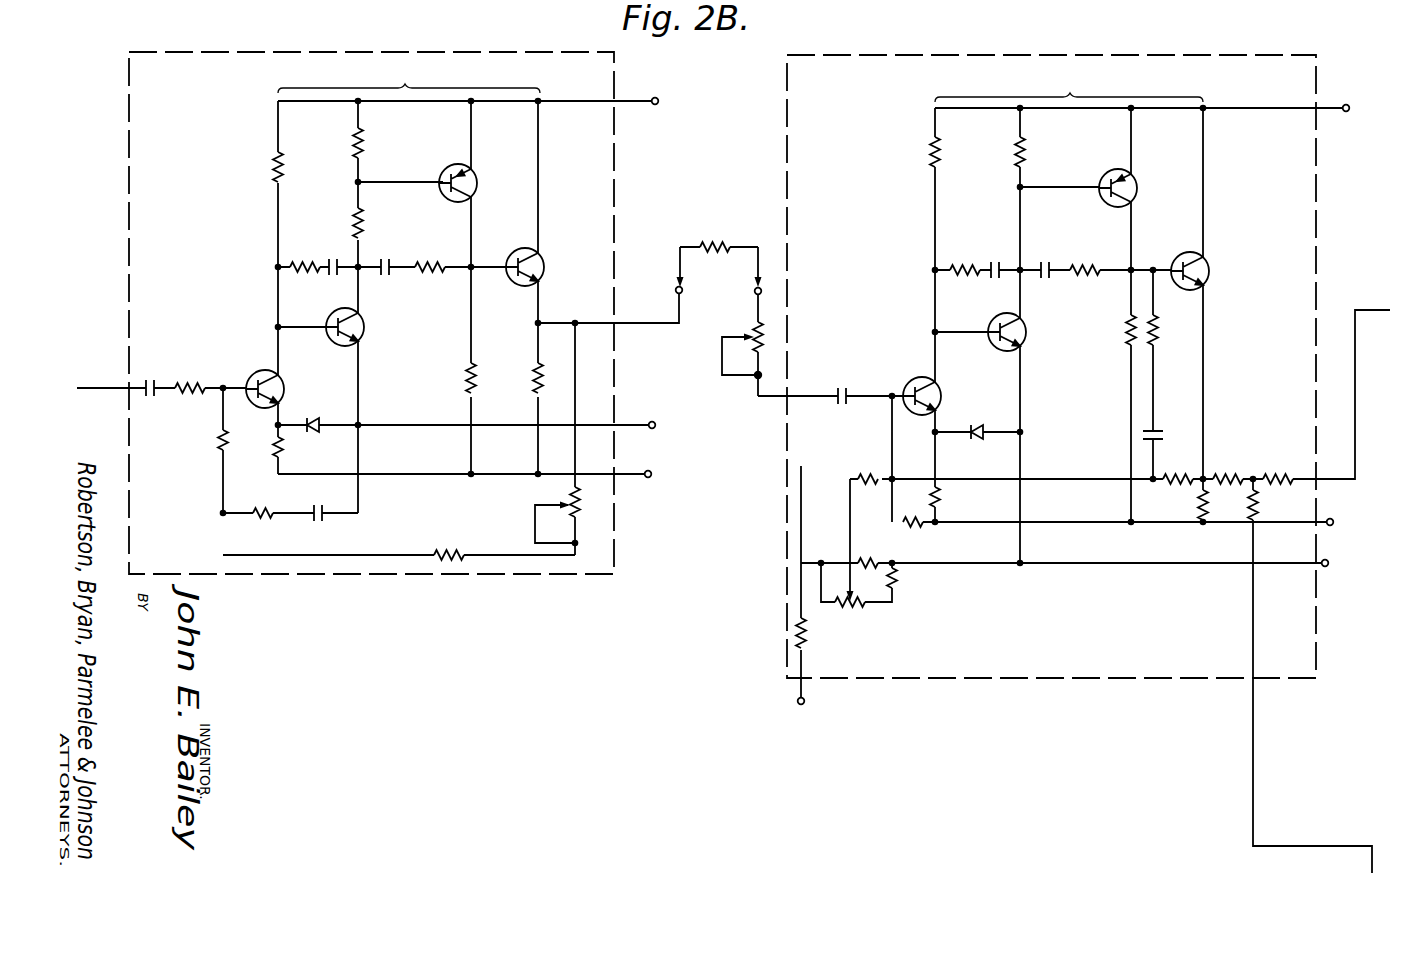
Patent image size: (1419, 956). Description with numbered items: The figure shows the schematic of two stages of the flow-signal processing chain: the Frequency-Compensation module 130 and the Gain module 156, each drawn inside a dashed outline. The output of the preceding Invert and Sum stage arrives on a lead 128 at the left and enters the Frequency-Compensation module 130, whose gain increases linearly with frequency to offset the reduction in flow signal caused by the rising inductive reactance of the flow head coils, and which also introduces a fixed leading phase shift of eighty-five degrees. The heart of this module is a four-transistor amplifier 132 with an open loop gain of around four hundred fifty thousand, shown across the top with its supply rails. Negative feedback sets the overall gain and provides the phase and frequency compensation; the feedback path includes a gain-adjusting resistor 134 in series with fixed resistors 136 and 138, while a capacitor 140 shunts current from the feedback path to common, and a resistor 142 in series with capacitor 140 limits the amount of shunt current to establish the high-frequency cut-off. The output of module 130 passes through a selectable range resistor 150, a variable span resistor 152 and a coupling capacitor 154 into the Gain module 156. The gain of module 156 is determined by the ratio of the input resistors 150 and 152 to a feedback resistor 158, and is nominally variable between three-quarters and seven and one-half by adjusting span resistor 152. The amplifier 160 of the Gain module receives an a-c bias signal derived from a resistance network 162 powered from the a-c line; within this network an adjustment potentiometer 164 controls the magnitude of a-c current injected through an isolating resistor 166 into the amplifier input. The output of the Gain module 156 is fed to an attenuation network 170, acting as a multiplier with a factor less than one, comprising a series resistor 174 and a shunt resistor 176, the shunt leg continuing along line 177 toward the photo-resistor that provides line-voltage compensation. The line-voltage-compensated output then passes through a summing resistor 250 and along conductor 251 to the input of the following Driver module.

The lead 128 is at (92, 385).
The Frequency-Compensation module 130 is at (474, 46).
The four-transistor amplifier 132 is at (415, 90).
The gain-adjusting resistor 134 is at (585, 505).
The fixed resistor 136 is at (455, 548).
The fixed resistor 138 is at (218, 441).
The capacitor 140 is at (321, 526).
The resistor 142 is at (268, 508).
The selectable range resistor 150 is at (712, 243).
The variable span resistor 152 is at (752, 328).
The coupling capacitor 154 is at (850, 388).
The Gain module 156 is at (1137, 50).
The feedback resistor 158 is at (1172, 488).
The amplifier 160 is at (1140, 88).
The resistance network 162 is at (855, 466).
The adjustment potentiometer 164 is at (850, 612).
The isolating resistor 166 is at (873, 466).
The attenuation network 170 is at (1240, 456).
The series resistor 174 is at (1222, 490).
The shunt resistor 176 is at (1262, 500).
The output line 177 is at (1310, 846).
The summing resistor 250 is at (1278, 476).
The output conductor 251 is at (1375, 310).